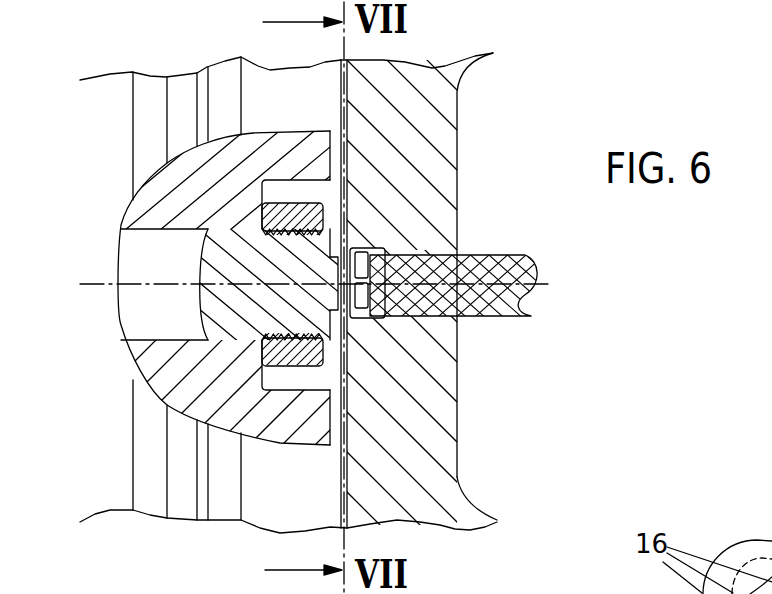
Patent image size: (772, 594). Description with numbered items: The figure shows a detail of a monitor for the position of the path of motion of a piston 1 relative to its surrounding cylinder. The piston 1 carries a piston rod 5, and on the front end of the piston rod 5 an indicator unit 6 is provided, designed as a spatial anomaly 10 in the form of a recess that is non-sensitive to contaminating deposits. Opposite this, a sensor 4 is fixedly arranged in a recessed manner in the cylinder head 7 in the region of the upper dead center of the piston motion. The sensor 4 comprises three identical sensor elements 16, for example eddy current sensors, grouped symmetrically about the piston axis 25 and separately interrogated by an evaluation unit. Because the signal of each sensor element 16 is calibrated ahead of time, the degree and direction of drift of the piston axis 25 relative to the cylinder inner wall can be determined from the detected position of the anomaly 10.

The piston 1 is at (299, 494).
The sensor 4 is at (375, 325).
The piston rod 5 is at (160, 258).
The indicator unit 6 is at (313, 303).
The cylinder head 7 is at (431, 478).
The anomaly 10 is at (365, 243).
The sensor elements 16 is at (362, 300).
The piston axis 25 is at (95, 283).